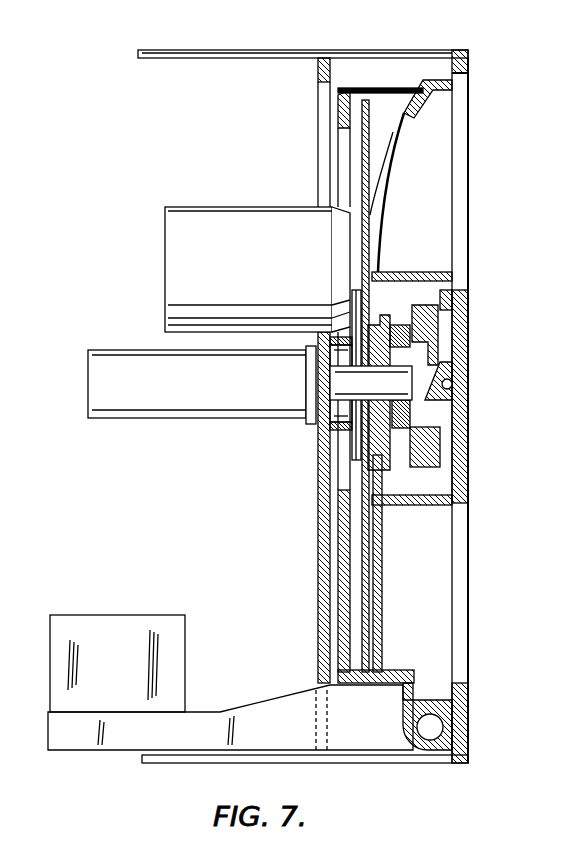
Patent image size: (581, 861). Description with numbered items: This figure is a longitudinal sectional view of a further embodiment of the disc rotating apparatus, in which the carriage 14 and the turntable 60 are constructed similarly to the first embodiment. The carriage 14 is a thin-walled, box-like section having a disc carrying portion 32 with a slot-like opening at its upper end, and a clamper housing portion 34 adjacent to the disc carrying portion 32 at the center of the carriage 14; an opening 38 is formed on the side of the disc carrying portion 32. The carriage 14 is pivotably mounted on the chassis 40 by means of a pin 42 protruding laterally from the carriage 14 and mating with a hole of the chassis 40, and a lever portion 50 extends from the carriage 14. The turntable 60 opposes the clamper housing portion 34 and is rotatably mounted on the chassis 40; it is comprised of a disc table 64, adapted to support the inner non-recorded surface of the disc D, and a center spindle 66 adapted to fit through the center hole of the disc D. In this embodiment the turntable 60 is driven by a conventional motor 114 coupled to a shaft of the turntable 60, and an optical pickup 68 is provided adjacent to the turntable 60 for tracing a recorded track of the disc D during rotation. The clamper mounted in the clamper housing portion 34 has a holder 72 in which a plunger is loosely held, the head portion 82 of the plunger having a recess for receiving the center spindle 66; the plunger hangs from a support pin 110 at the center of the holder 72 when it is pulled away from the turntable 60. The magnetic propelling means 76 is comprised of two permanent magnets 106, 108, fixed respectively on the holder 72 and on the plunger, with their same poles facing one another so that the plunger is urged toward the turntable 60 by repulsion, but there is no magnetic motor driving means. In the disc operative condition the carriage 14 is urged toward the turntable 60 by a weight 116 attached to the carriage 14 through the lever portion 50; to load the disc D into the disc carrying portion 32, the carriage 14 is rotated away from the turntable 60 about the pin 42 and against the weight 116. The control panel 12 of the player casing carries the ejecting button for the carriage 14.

The control panel 12 is at (468, 62).
The carriage 14 is at (471, 393).
The disc carrying portion 32 is at (398, 95).
The clamper housing portion 34 is at (454, 335).
The opening 38 is at (350, 165).
The chassis 40 is at (322, 542).
The pin 42 is at (432, 727).
The lever portion 50 is at (268, 703).
The turntable 60 is at (338, 438).
The disc table 64 is at (355, 455).
The center spindle 66 is at (330, 426).
The optical pickup 68 is at (172, 238).
The holder 72 is at (447, 297).
The magnetic propelling means 76 is at (410, 453).
The head portion 82 is at (383, 312).
The permanent magnet 106 is at (425, 315).
The permanent magnet 108 is at (405, 312).
The support pin 110 is at (440, 378).
The motor 114 is at (155, 405).
The weight 116 is at (122, 637).
The disc D is at (367, 155).